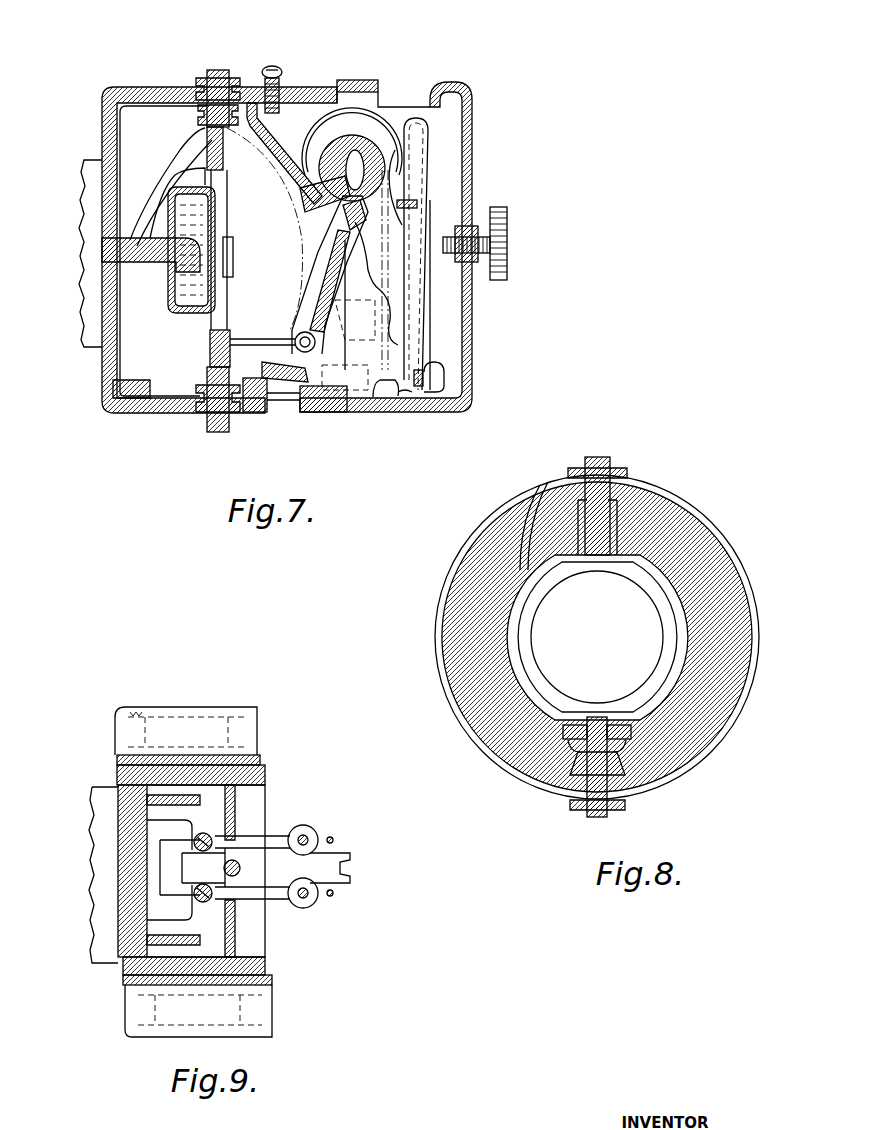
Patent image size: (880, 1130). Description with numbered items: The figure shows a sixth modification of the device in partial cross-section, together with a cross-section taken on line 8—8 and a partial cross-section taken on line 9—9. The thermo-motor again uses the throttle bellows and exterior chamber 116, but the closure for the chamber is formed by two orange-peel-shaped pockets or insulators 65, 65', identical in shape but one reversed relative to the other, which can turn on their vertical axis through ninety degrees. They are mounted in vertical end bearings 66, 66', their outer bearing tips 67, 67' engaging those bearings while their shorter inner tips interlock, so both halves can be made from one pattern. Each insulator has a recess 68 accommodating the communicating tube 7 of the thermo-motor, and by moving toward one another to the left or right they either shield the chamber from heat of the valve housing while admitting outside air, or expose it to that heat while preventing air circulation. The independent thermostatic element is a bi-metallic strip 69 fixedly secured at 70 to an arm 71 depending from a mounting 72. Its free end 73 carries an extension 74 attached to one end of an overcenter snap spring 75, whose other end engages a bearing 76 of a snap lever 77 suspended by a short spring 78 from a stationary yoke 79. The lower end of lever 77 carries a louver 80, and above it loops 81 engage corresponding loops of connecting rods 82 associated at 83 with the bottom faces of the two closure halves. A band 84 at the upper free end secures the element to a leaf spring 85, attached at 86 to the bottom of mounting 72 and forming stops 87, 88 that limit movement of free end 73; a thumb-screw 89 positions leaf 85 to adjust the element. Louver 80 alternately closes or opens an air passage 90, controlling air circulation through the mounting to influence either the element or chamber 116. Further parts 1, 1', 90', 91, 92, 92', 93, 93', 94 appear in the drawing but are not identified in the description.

In FIG. 7, the mounting flange 1 is at (60, 253).
In FIG. 7, the flange gasket 1' is at (84, 381).
In FIG. 7, the communicating tube 7 is at (118, 254).
In FIG. 7, the section line 8— 8 is at (210, 70).
In FIG. 7, the section line 9— 9 is at (200, 366).
In FIG. 7, the orange-peel-shaped pocket insulator 65 is at (199, 250).
In FIG. 8, the orange-peel-shaped pocket insulator 65 is at (598, 637).
In FIG. 9, the orange-peel-shaped pocket insulator 65 is at (163, 898).
In FIG. 8, the orange-peel-shaped pocket insulator 65' is at (528, 630).
In FIG. 9, the orange-peel-shaped pocket insulator 65' is at (162, 872).
In FIG. 7, the vertical end bearing 66 is at (234, 417).
In FIG. 8, the vertical end bearing 66 is at (570, 781).
In FIG. 7, the vertical end bearing 66' is at (233, 78).
In FIG. 8, the vertical end bearing 66' is at (605, 485).
In FIG. 8, the outer bearing tip 67 is at (597, 638).
In FIG. 8, the outer bearing tip 67' is at (643, 504).
In FIG. 7, the recess 68 is at (118, 240).
In FIG. 7, the bi-metallic strip 69 is at (392, 108).
In FIG. 7, the securing point 70 is at (326, 174).
In FIG. 7, the arm 71 is at (283, 90).
In FIG. 7, the mounting 72 is at (352, 80).
In FIG. 7, the free end of thermostatic element 73 is at (420, 332).
In FIG. 7, the extension 74 is at (405, 380).
In FIG. 7, the overcenter operating snap spring 75 is at (400, 334).
In FIG. 7, the bearing of snap lever 76 is at (328, 222).
In FIG. 7, the snap lever 77 is at (335, 300).
In FIG. 7, the short spring 78 is at (366, 180).
In FIG. 7, the stationary yoke 79 is at (380, 152).
In FIG. 7, the louver 80 is at (275, 384).
In FIG. 7, the loops 81 is at (300, 330).
In FIG. 9, the loops 81 is at (318, 841).
In FIG. 7, the connecting rods 82 is at (294, 340).
In FIG. 9, the connecting rods 82 is at (240, 866).
In FIG. 7, the connection point 83 is at (158, 410).
In FIG. 8, the connection point 83 is at (578, 742).
In FIG. 9, the connection point 83 is at (195, 868).
In FIG. 7, the band 84 is at (418, 203).
In FIG. 7, the leaf spring 85 is at (440, 208).
In FIG. 7, the attachment point 86 is at (436, 410).
In FIG. 7, the stop or abutting means 87 is at (440, 378).
In FIG. 7, the stop or abutting means 88 is at (382, 398).
In FIG. 7, the thumb-screw 89 is at (508, 245).
In FIG. 7, the air passage 90 is at (295, 408).
In FIG. 7, the housing notch 90' is at (415, 79).
In FIG. 7, the liner 91 is at (128, 118).
In FIG. 9, the liner 91 is at (150, 845).
In FIG. 7, the upper nut 92 is at (194, 87).
In FIG. 7, the lower nut 92' is at (188, 424).
In FIG. 9, the lower nut 92' is at (285, 838).
In FIG. 8, the insulating layer 93 is at (607, 512).
In FIG. 8, the lower insulating block 93' is at (620, 785).
In FIG. 7, the bracket plate 94 is at (233, 262).
In FIG. 9, the bracket plate 94 is at (270, 767).
In FIG. 7, the exterior chamber 116 is at (166, 288).